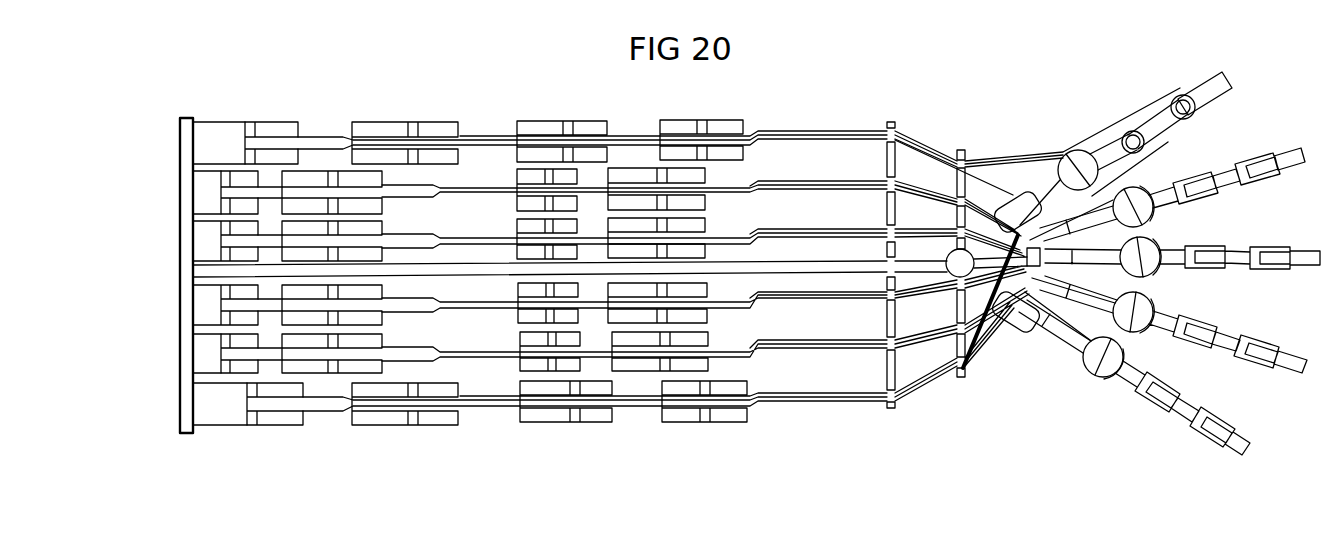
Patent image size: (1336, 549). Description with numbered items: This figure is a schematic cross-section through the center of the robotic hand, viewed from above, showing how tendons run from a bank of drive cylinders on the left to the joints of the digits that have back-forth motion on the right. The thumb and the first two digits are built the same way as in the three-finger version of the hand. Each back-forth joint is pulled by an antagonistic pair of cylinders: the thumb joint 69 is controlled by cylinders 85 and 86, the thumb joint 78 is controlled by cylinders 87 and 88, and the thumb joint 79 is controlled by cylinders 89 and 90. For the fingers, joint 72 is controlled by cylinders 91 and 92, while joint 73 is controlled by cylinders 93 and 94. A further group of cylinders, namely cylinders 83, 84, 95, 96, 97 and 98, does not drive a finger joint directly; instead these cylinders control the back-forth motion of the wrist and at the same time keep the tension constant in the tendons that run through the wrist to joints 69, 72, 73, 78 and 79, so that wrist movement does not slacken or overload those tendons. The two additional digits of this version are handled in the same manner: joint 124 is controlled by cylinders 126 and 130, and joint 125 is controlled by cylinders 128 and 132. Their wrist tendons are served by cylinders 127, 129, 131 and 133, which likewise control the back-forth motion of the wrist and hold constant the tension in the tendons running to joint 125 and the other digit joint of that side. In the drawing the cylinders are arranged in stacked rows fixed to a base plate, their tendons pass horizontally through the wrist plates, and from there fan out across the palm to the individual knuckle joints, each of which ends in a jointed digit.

The joint 69 is at (1077, 163).
The joint 72 is at (1162, 248).
The joint 73 is at (1150, 192).
The joint 78 is at (1130, 127).
The joint 79 is at (1183, 88).
The cylinder 83 is at (285, 418).
The cylinder 84 is at (267, 132).
The cylinder 85 is at (440, 417).
The cylinder 86 is at (433, 128).
The cylinder 87 is at (597, 413).
The cylinder 88 is at (590, 125).
The cylinder 89 is at (737, 412).
The cylinder 90 is at (727, 122).
The cylinder 91 is at (637, 310).
The cylinder 92 is at (680, 173).
The cylinder 93 is at (317, 315).
The cylinder 94 is at (367, 178).
The cylinder 95 is at (532, 307).
The cylinder 96 is at (535, 175).
The cylinder 97 is at (210, 313).
The cylinder 98 is at (238, 180).
The joint 124 is at (1145, 307).
The joint 125 is at (1122, 358).
The cylinder 126 is at (678, 360).
The cylinder 127 is at (538, 358).
The cylinder 128 is at (368, 365).
The cylinder 129 is at (243, 367).
The cylinder 130 is at (643, 225).
The cylinder 131 is at (523, 227).
The cylinder 132 is at (318, 232).
The cylinder 133 is at (213, 243).